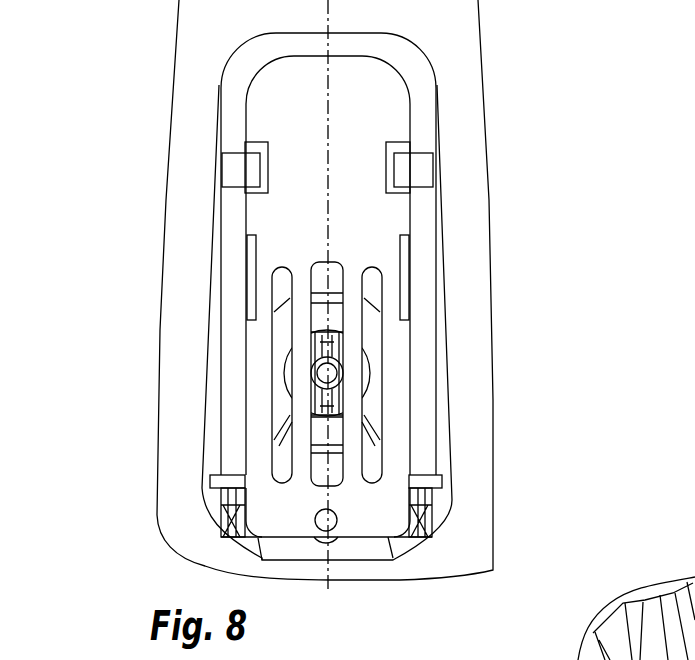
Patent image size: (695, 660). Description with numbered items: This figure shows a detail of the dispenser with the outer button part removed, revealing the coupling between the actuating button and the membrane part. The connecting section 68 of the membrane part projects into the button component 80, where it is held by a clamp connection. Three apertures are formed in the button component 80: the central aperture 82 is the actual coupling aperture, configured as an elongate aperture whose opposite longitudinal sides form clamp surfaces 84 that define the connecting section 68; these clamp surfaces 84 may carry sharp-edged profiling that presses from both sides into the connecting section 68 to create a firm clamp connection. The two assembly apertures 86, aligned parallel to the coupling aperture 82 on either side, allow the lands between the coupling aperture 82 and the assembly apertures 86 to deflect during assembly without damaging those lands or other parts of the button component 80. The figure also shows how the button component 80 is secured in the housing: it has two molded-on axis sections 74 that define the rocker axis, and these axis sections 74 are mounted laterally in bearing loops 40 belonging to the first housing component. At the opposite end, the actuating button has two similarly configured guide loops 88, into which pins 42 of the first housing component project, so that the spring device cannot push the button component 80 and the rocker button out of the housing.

The bearing loops 40 is at (393, 537).
The pins 42 is at (255, 164).
The connecting section 68 is at (327, 373).
The axis sections 74 is at (403, 533).
The button component 80 is at (389, 218).
The coupling aperture 82 is at (330, 280).
The clamp surfaces 84 is at (312, 372).
The assembly apertures 86 is at (287, 325).
The guide loops 88 is at (262, 142).